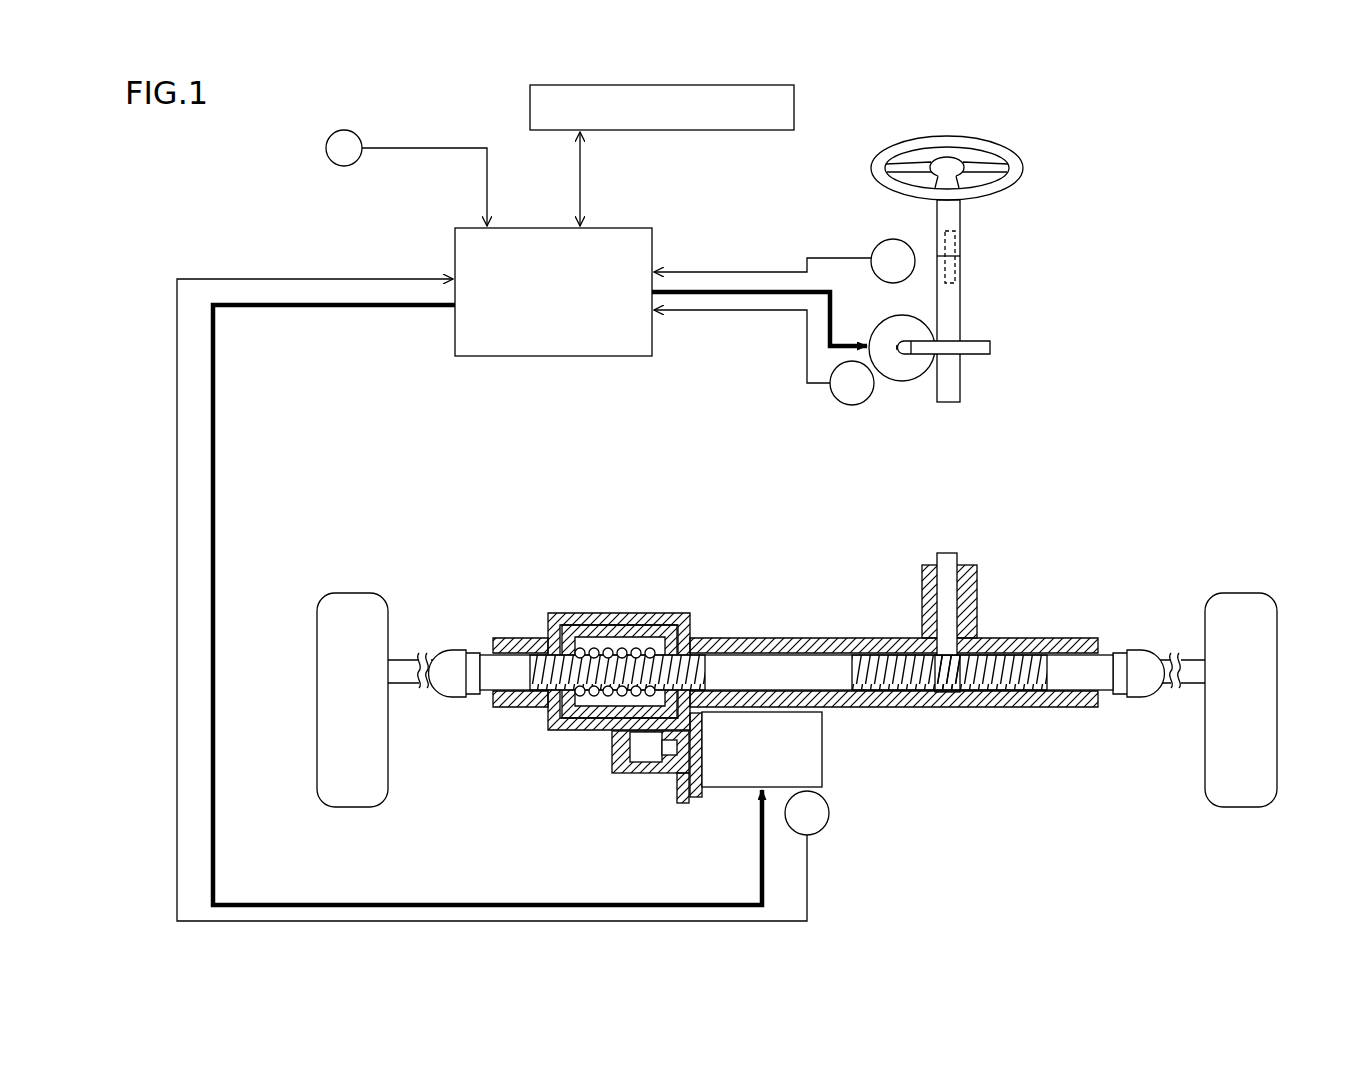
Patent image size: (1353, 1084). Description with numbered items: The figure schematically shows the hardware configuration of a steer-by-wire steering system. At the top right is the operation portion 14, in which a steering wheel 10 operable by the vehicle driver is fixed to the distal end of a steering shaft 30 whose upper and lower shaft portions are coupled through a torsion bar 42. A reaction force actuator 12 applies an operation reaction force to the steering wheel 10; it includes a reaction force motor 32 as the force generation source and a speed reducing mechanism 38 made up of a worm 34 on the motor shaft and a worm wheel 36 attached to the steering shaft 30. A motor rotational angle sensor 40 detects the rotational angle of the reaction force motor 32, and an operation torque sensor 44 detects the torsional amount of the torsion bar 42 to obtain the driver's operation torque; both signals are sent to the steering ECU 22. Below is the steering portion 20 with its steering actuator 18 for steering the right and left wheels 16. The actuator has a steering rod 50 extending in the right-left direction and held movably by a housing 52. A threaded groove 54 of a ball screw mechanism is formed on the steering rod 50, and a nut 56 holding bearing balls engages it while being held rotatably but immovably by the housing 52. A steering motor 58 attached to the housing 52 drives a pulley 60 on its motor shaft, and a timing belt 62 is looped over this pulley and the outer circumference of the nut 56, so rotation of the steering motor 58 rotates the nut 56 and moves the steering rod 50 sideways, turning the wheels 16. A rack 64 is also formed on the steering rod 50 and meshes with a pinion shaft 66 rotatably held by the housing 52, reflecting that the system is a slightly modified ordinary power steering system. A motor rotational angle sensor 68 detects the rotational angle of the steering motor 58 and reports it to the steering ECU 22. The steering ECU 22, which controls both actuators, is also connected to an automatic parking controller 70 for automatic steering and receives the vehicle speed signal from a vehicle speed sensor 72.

The steering wheel 10 is at (987, 144).
The reaction force actuator 12 is at (912, 448).
The operation portion 14 is at (1102, 267).
The wheel 16 is at (337, 603).
The steering actuator 18 is at (871, 762).
The steering portion 20 is at (965, 872).
The steering electronic control unit 22 is at (582, 357).
The steering shaft 30 is at (962, 305).
The reaction force motor 32 is at (899, 372).
The worm 34 is at (896, 350).
The worm wheel 36 is at (975, 357).
The speed reducing mechanism 38 is at (923, 390).
The motor rotational angle sensor 40 is at (851, 406).
The torsion bar 42 is at (963, 246).
The operation torque sensor 44 is at (886, 240).
The steering rod 50 is at (755, 668).
The housing 52 is at (716, 645).
The threaded groove 54 is at (545, 640).
The nut 56 is at (588, 634).
The steering motor 58 is at (732, 778).
The pulley 60 is at (650, 753).
The timing belt 62 is at (601, 727).
The rack 64 is at (1017, 665).
The pinion shaft 66 is at (947, 620).
The motor rotational angle sensor 68 is at (819, 832).
The automatic parking controller 70 is at (688, 131).
The vehicle speed sensor 72 is at (335, 131).